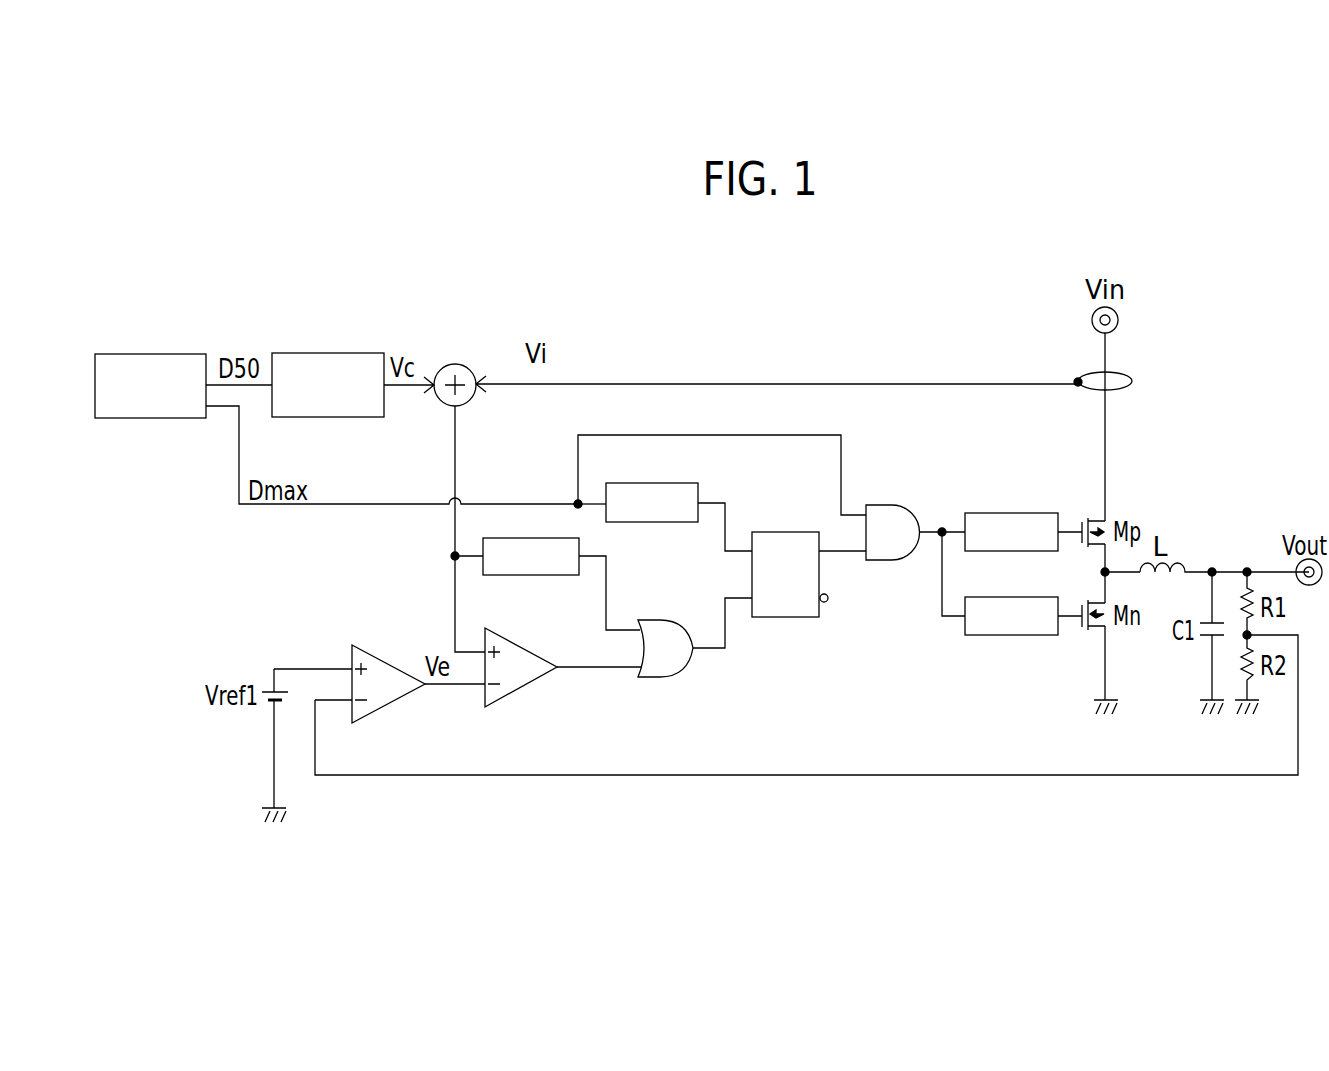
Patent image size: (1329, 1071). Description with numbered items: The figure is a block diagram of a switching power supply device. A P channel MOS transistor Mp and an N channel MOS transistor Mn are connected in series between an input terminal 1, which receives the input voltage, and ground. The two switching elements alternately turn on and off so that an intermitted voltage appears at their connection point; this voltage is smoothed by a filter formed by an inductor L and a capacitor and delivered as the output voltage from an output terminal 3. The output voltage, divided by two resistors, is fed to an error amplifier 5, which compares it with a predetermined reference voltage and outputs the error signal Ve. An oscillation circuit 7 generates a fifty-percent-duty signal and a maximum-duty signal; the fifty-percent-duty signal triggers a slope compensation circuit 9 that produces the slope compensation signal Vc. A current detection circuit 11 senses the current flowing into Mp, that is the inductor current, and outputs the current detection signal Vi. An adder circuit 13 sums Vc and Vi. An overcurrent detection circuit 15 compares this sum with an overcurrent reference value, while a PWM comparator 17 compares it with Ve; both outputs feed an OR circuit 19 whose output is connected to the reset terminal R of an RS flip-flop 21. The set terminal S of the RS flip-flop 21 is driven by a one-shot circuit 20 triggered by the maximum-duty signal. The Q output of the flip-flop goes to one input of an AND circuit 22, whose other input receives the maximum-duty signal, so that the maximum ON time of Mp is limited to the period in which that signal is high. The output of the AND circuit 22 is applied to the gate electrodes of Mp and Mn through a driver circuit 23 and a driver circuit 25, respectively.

The input terminal 1 is at (1118, 316).
The output terminal 3 is at (1309, 586).
The error amplifier 5 is at (388, 658).
The oscillation circuit 7 is at (155, 352).
The slope compensation circuit 9 is at (320, 352).
The current detection circuit 11 is at (1133, 381).
The adder circuit 13 is at (455, 364).
The overcurrent detection circuit 15 is at (525, 575).
The PWM comparator 17 is at (520, 688).
The OR circuit 19 is at (655, 677).
The one-shot circuit 20 is at (635, 522).
The RS flip-flop 21 is at (762, 532).
The AND circuit 22 is at (888, 505).
The driver circuit 23 is at (1012, 513).
The driver circuit 25 is at (1012, 635).